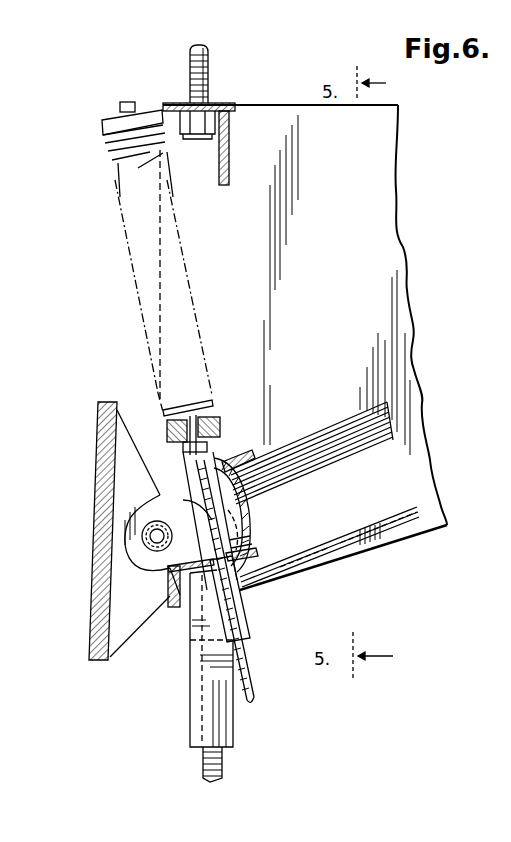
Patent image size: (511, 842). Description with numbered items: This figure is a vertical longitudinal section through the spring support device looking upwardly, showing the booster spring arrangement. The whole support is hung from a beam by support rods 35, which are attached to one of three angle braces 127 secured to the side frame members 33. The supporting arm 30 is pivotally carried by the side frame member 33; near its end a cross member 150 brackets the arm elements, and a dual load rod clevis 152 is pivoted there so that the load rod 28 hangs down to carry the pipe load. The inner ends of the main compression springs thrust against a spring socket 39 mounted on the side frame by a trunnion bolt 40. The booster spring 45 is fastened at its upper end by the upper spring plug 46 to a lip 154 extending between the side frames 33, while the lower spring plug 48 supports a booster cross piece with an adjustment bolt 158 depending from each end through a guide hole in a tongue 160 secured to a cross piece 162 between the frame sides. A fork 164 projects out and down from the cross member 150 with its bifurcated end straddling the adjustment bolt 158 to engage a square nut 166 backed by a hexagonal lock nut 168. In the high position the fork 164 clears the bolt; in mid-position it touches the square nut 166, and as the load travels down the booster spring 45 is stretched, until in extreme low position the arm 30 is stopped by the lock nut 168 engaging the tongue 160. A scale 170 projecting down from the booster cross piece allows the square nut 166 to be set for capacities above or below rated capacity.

The load rod 28 is at (203, 766).
The supporting arm 30 is at (322, 426).
The side frame member 33 is at (398, 180).
The support rod 35 is at (209, 61).
The spring socket 39 is at (93, 620).
The trunnion bolt 40 is at (155, 548).
The booster spring 45 is at (124, 238).
The upper spring plug 46 is at (118, 161).
The lower spring plug 48 is at (212, 406).
The angle brace 127 is at (228, 152).
The cross member 150 is at (228, 460).
The load rod clevis 152 is at (195, 713).
The lip 154 is at (100, 126).
The adjustment bolt 158 is at (245, 668).
The tongue 160 is at (256, 550).
The cross piece 162 is at (166, 606).
The fork 164 is at (240, 493).
The square nut 166 is at (246, 524).
The hexagonal lock nut 168 is at (250, 538).
The scale 170 is at (244, 620).